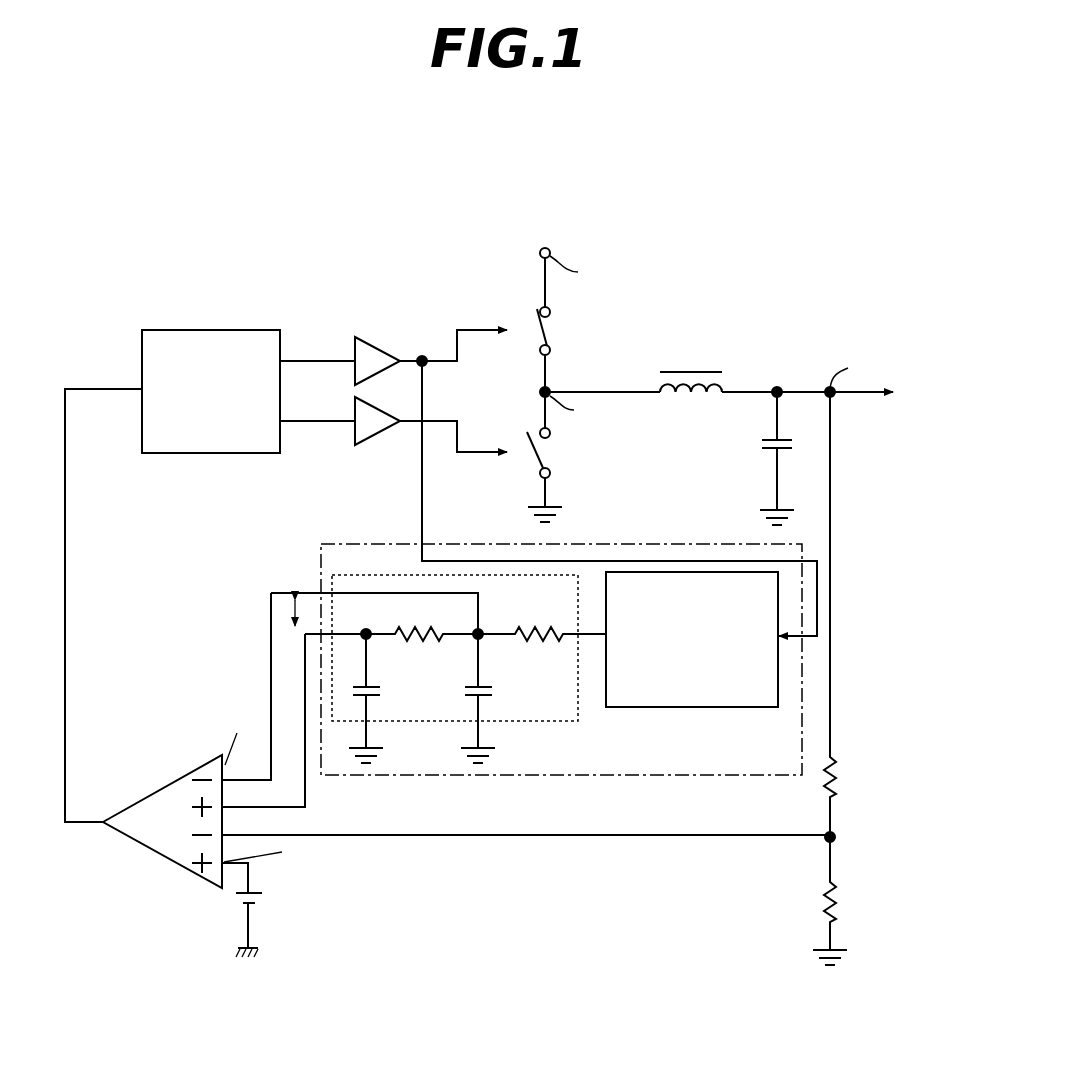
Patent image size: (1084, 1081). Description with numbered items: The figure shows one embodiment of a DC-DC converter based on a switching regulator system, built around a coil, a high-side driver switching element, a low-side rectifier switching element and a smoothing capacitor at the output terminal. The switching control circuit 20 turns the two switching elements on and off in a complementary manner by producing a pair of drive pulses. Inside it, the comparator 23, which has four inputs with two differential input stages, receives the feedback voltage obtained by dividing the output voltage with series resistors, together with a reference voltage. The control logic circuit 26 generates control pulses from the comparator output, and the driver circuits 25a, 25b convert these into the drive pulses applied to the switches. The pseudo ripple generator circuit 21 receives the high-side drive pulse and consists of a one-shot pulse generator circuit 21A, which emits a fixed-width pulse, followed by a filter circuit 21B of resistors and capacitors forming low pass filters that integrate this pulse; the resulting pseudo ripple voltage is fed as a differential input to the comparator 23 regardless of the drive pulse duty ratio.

The switching control circuit 20 is at (360, 252).
The pseudo ripple generator circuit 21 is at (454, 777).
The one-shot pulse generator circuit 21A is at (695, 708).
The filter circuit 21B is at (510, 722).
The comparator 23 is at (165, 860).
The driver circuit 25a is at (382, 337).
The driver circuit 25b is at (378, 445).
The control logic circuit 26 is at (195, 455).